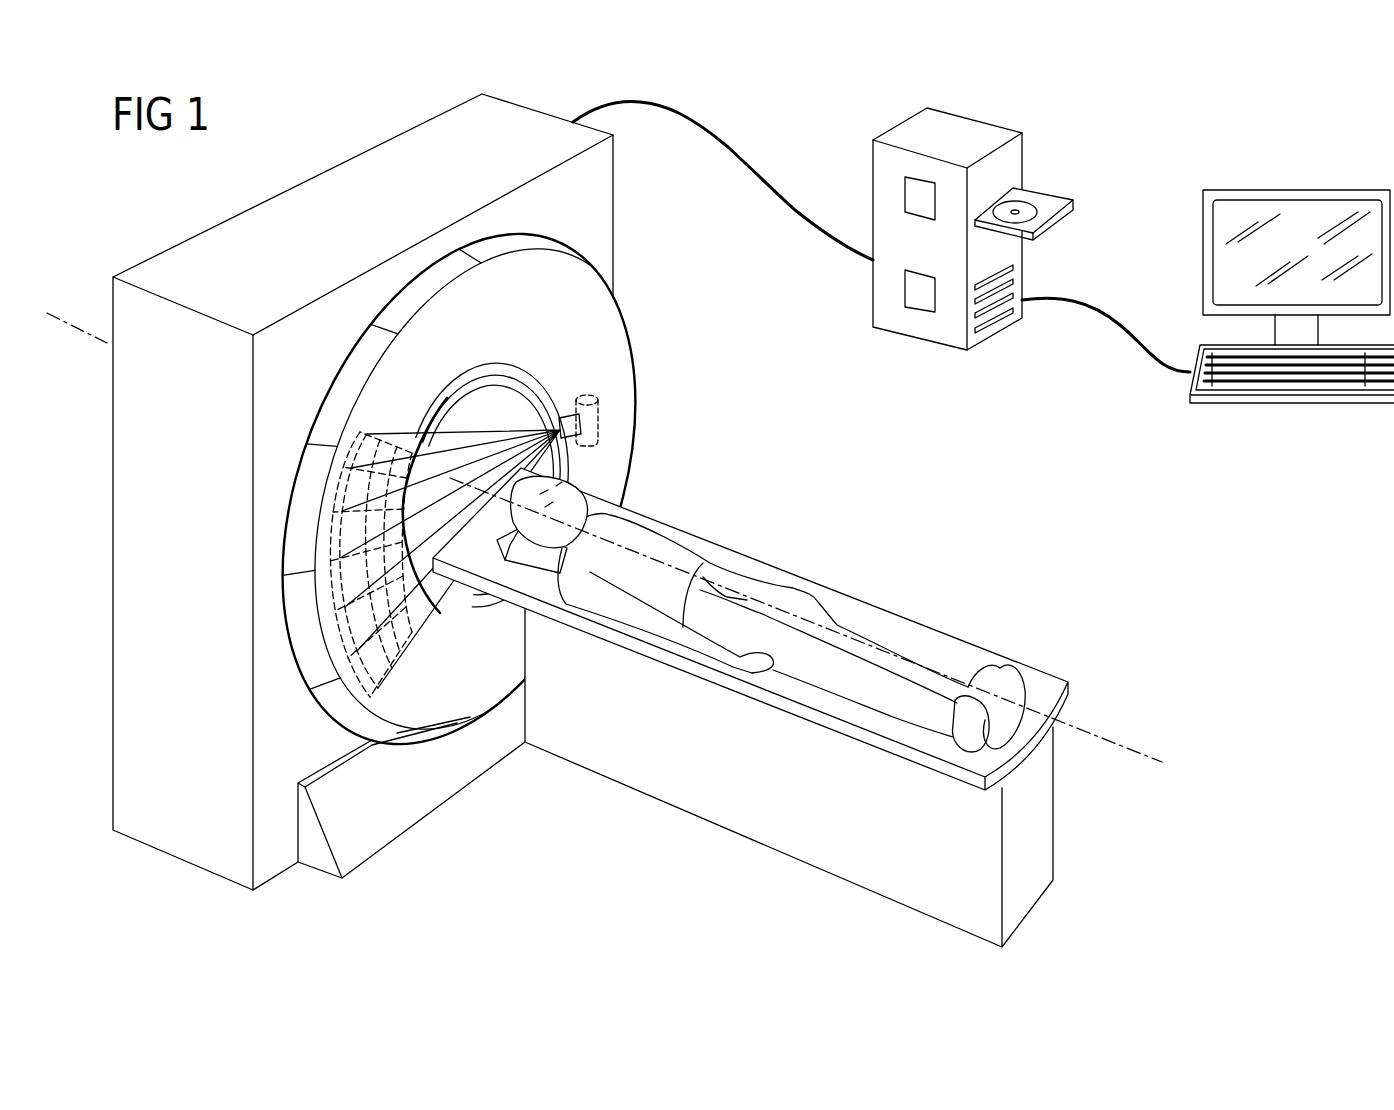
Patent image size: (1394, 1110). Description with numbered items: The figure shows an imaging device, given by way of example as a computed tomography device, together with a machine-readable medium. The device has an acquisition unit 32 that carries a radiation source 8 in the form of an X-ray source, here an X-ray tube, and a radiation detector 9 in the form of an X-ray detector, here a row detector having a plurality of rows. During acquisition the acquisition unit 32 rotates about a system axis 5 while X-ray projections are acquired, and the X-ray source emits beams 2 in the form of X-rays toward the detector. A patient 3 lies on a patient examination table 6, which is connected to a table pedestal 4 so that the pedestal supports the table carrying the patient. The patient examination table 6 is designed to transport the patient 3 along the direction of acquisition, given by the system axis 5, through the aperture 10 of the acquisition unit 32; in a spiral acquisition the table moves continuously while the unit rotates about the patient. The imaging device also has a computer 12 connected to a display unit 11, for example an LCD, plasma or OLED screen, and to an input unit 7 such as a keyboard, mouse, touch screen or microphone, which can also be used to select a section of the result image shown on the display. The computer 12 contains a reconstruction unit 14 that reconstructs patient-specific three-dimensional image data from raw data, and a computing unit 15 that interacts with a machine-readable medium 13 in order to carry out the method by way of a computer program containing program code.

The beams 2 is at (508, 400).
The patient 3 is at (837, 625).
The table pedestal 4 is at (858, 862).
The system axis 5 is at (1098, 735).
The patient examination table 6 is at (963, 660).
The input unit 7 is at (1190, 387).
The radiation source 8 is at (600, 420).
The radiation detector 9 is at (387, 660).
The aperture 10 is at (440, 433).
The display unit 11 is at (1207, 258).
The computer 12 is at (968, 128).
The machine-readable medium 13 is at (1030, 208).
The reconstruction unit 14 is at (912, 197).
The computing unit 15 is at (918, 310).
The acquisition unit 32 is at (634, 357).